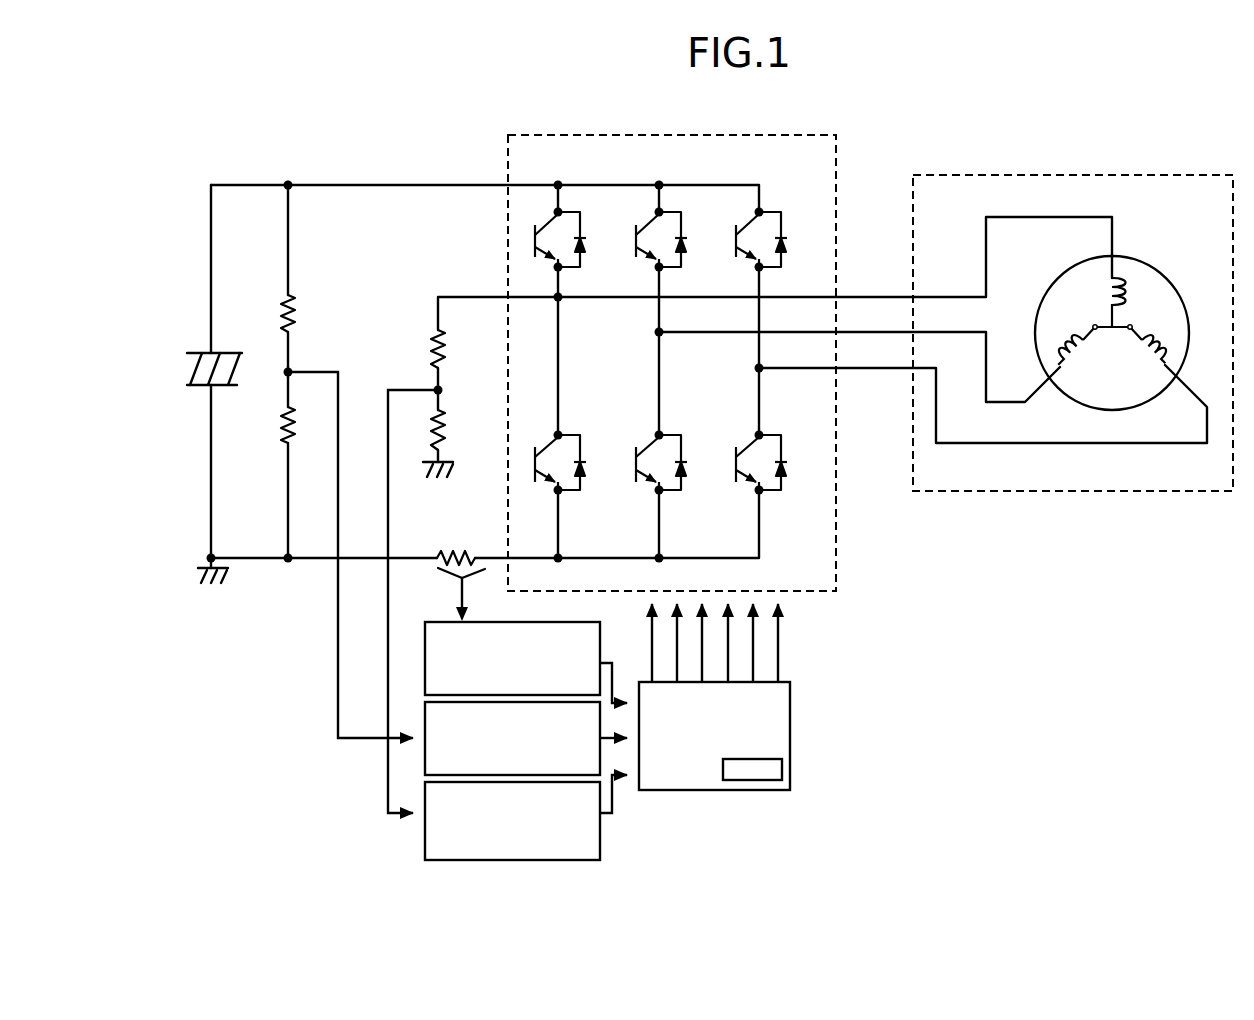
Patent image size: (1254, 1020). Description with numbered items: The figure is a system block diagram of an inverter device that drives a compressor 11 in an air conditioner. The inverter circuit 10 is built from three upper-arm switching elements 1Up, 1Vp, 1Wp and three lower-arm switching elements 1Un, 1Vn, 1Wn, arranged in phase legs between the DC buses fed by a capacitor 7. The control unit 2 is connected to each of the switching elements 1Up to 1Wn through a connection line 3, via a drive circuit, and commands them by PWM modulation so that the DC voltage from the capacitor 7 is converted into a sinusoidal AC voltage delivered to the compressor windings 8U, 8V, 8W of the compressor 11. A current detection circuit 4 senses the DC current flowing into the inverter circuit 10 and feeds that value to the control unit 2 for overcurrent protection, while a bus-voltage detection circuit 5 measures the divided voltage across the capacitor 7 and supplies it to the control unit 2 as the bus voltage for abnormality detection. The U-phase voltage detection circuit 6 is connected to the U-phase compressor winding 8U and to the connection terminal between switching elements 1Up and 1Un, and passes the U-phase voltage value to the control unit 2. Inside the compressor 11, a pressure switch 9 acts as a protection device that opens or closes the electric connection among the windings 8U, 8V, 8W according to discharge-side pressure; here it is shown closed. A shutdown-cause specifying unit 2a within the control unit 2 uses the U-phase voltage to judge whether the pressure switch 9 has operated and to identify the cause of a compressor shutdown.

The upper-arm switching element 1Up is at (553, 258).
The upper-arm switching element 1Vp is at (654, 258).
The upper-arm switching element 1Wp is at (754, 258).
The lower-arm switching element 1Un is at (563, 493).
The lower-arm switching element 1Vn is at (664, 493).
The lower-arm switching element 1Wn is at (764, 493).
The control unit 2 is at (741, 762).
The shutdown-cause specifying unit 2a is at (762, 782).
The connection line 3 is at (778, 668).
The current detection circuit 4 is at (424, 670).
The bus-voltage detection circuit 5 is at (424, 728).
The U-phase voltage detection circuit 6 is at (424, 805).
The capacitor 7 is at (203, 353).
The U-phase compressor winding 8U is at (1127, 284).
The V-phase compressor winding 8V is at (1070, 373).
The W-phase compressor winding 8W is at (1162, 373).
The pressure switch 9 is at (1117, 326).
The inverter circuit 10 is at (505, 177).
The compressor 11 is at (910, 210).